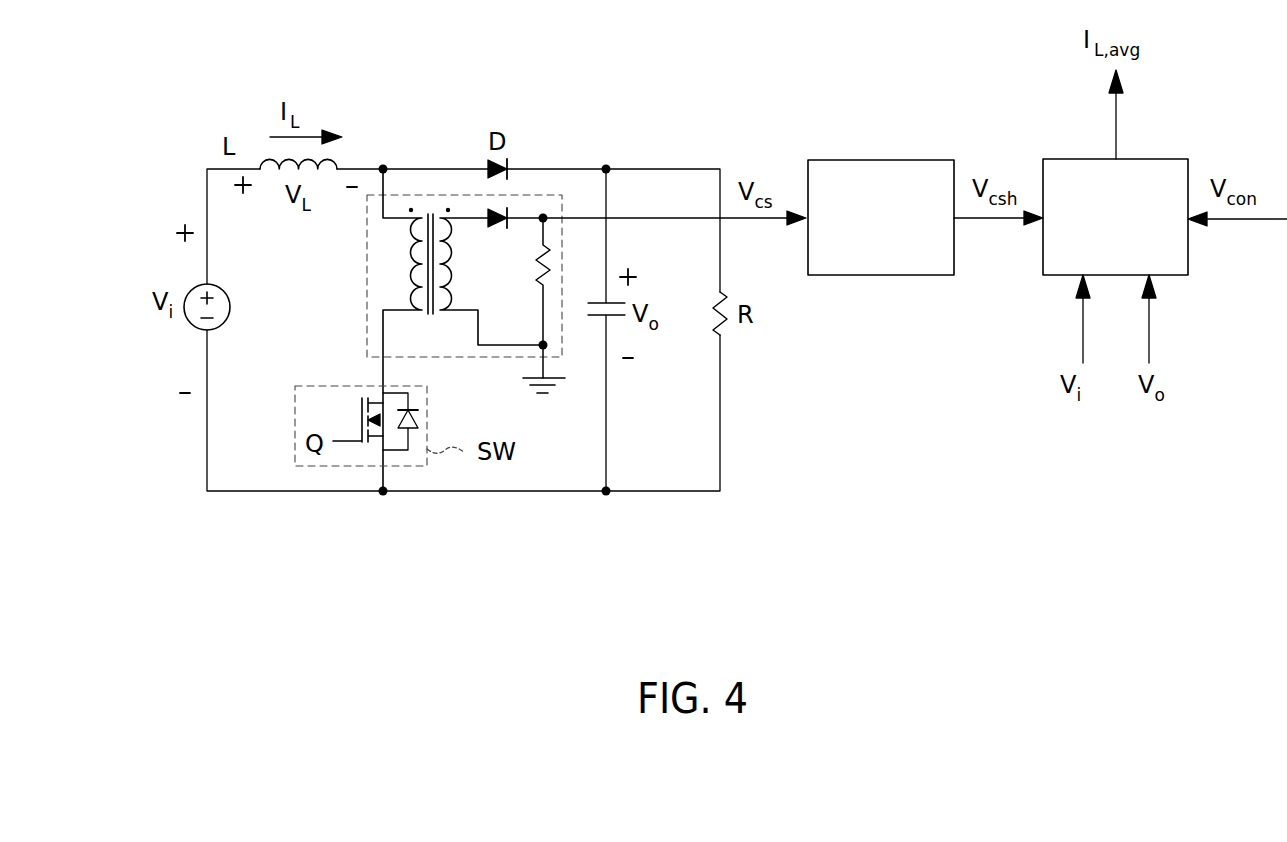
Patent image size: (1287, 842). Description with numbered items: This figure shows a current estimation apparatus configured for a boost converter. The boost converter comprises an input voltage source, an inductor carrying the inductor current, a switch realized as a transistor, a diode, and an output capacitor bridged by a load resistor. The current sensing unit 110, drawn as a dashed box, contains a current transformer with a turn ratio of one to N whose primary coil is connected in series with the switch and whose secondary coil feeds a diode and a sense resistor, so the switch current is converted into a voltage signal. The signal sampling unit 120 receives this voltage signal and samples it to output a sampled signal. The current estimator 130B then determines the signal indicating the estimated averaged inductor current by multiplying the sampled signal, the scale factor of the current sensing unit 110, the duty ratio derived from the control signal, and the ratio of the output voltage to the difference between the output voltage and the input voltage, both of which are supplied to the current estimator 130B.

The current sensing unit 110 is at (367, 284).
The signal sampling unit 120 is at (878, 160).
The current estimator 130B is at (1165, 159).